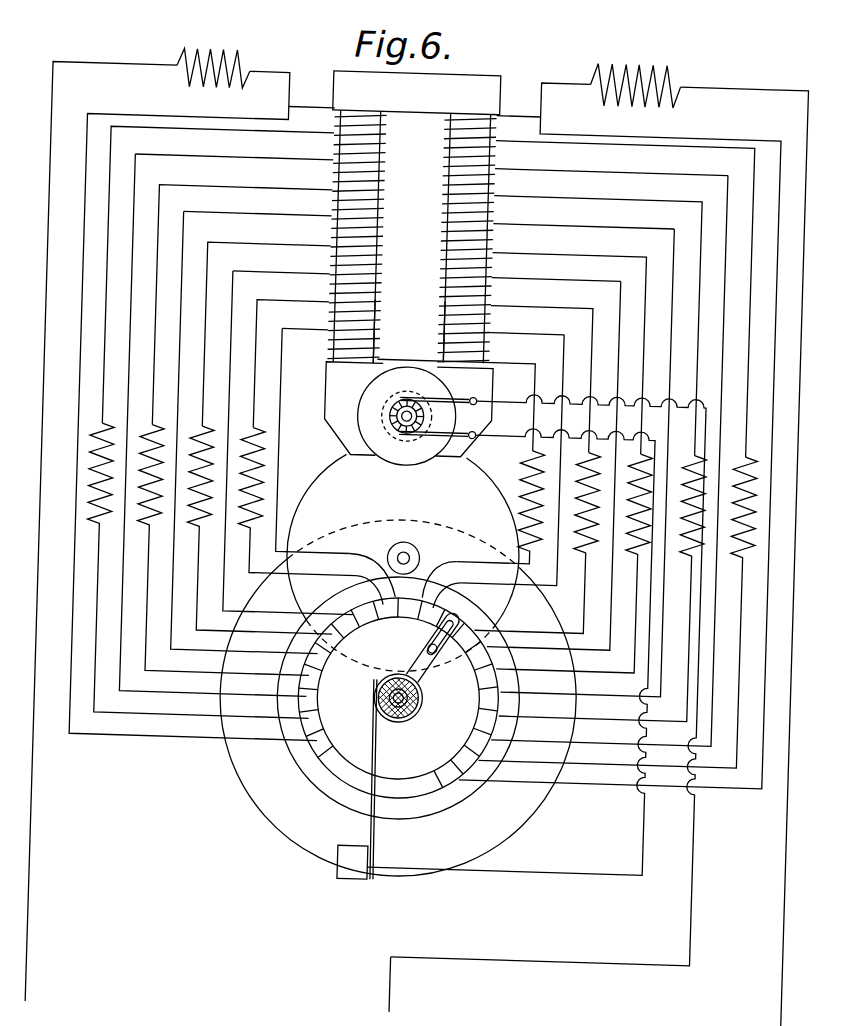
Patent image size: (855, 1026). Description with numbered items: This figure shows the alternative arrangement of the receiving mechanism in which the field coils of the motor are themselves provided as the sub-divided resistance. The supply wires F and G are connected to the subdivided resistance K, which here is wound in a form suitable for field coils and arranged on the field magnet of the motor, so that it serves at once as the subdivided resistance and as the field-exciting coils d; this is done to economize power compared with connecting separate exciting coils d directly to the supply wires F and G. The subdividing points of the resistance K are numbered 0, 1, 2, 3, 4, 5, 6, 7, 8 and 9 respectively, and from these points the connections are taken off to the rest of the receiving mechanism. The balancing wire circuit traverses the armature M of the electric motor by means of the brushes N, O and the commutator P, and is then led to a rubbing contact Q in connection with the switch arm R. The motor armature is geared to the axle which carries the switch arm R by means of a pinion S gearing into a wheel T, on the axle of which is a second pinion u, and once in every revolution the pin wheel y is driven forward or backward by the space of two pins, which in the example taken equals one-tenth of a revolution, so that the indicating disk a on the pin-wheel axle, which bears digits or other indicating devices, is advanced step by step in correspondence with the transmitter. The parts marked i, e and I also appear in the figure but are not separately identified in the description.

The subdivided resistance K is at (411, 238).
The exciting coils d is at (410, 278).
The armature M is at (376, 387).
The brush N is at (511, 647).
The brush O is at (549, 673).
The commutator P is at (403, 398).
The pinion S is at (386, 413).
The wheel T is at (326, 471).
The second pinion u is at (424, 549).
The conductors i is at (418, 582).
The switch arm R is at (417, 650).
The indicating disk a is at (258, 762).
The rubbing contact Q is at (383, 828).
The resistance coils e is at (423, 486).
The pin wheel y is at (658, 62).
The supply wire F is at (100, 532).
The supply wire G is at (730, 556).
The terminal I is at (396, 984).
The subdividing point 0 is at (519, 111).
The subdividing point 1 is at (611, 169).
The subdividing point 2 is at (583, 225).
The subdividing point 3 is at (557, 278).
The subdividing point 4 is at (527, 336).
The subdividing point 5 is at (305, 326).
The subdividing point 6 is at (282, 269).
The subdividing point 7 is at (257, 209).
The subdividing point 8 is at (234, 154).
The subdividing point 9 is at (312, 104).